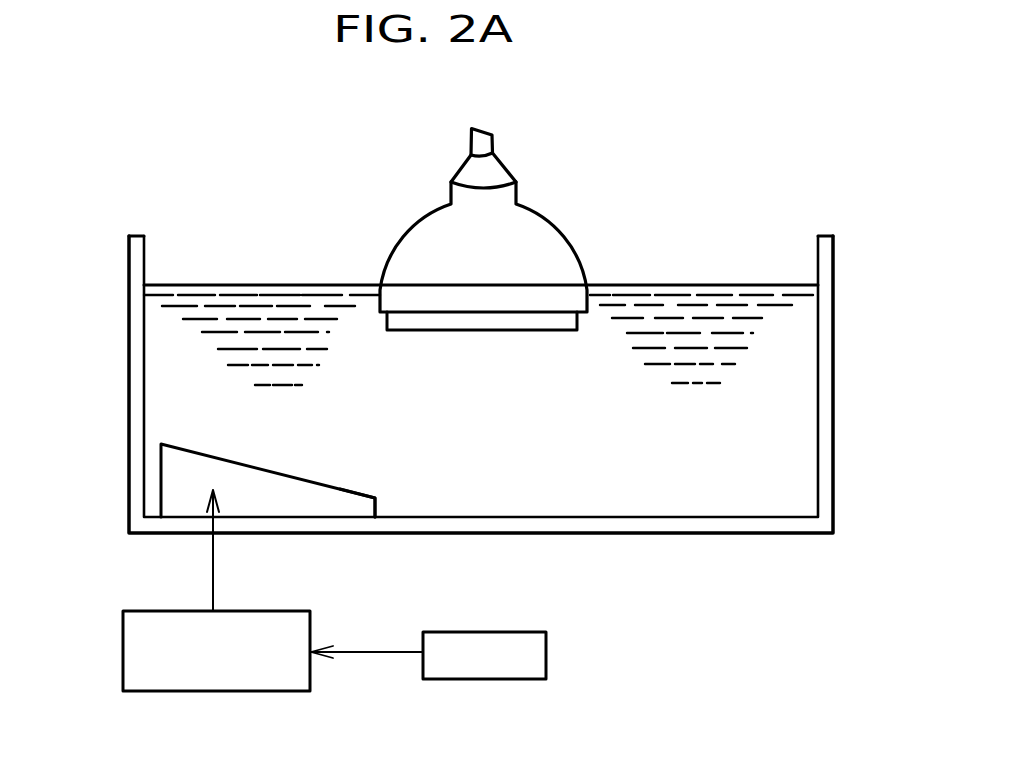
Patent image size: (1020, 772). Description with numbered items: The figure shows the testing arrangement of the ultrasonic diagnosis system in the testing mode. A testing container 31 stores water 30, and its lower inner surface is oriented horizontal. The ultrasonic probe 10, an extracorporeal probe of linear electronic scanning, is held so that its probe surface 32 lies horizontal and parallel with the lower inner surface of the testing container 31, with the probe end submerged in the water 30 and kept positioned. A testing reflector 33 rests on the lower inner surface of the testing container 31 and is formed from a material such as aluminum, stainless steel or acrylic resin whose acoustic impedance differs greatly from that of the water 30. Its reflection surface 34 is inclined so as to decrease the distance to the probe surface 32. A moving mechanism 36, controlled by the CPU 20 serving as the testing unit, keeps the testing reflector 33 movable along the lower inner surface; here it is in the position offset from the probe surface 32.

The ultrasonic probe 10 is at (549, 222).
The CPU 20 is at (546, 655).
The water 30 is at (737, 295).
The testing container 31 is at (130, 257).
The probe surface 32 is at (562, 330).
The testing reflector 33 is at (271, 502).
The reflection surface 34 is at (350, 489).
The moving mechanism 36 is at (142, 611).